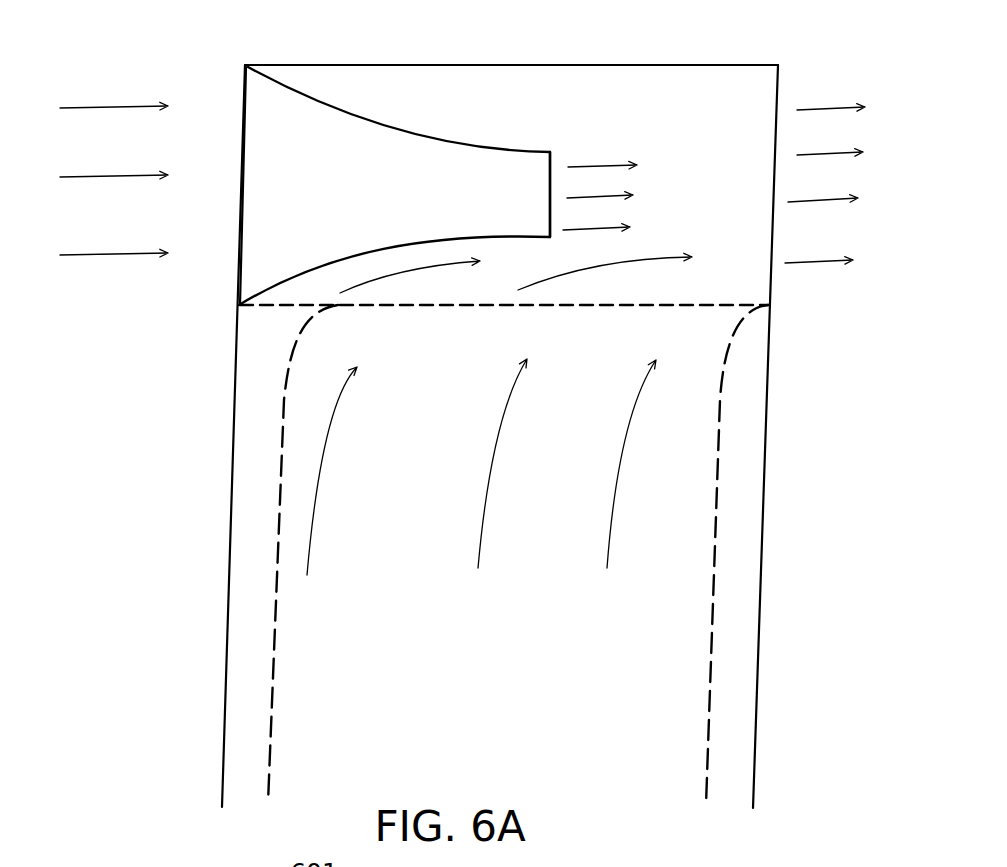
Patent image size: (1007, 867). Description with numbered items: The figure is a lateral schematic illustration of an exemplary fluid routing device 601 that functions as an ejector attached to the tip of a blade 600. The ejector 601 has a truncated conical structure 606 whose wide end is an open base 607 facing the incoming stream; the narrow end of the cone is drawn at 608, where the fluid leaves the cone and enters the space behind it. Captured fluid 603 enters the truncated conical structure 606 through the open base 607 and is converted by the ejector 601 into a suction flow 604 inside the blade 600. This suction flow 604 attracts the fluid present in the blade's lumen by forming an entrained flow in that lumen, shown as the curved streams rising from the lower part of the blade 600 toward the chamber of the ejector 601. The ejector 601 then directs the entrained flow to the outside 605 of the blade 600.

The blade 600 is at (250, 517).
The fluid routing device 601 is at (588, 90).
The captured fluid 603 is at (93, 298).
The suction flow 604 is at (647, 175).
The outside of the blade 605 is at (812, 90).
The truncated conical structure 606 is at (450, 167).
The open base 607 is at (243, 172).
The nozzle outlet 608 is at (545, 158).